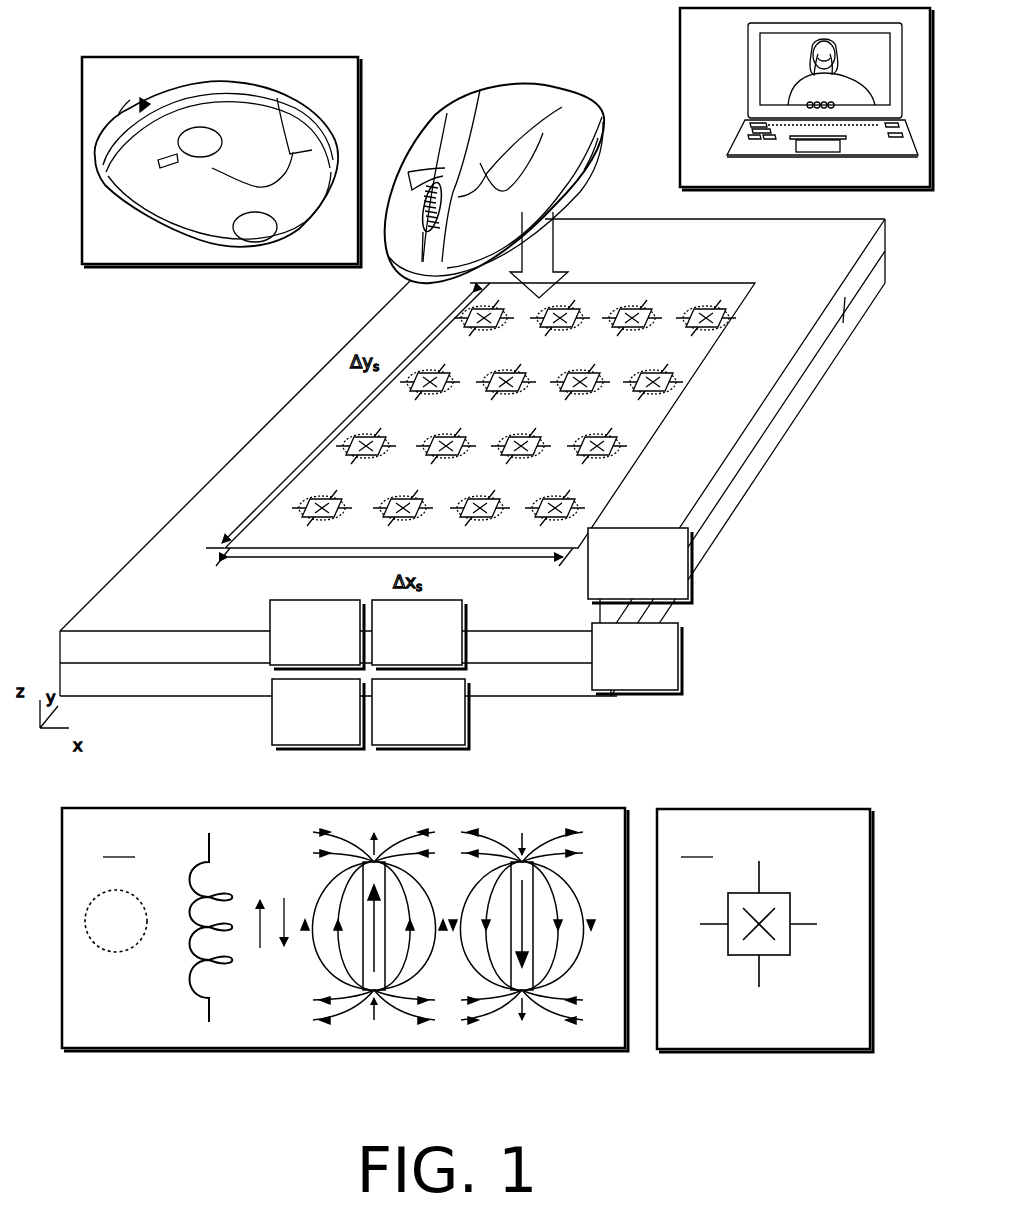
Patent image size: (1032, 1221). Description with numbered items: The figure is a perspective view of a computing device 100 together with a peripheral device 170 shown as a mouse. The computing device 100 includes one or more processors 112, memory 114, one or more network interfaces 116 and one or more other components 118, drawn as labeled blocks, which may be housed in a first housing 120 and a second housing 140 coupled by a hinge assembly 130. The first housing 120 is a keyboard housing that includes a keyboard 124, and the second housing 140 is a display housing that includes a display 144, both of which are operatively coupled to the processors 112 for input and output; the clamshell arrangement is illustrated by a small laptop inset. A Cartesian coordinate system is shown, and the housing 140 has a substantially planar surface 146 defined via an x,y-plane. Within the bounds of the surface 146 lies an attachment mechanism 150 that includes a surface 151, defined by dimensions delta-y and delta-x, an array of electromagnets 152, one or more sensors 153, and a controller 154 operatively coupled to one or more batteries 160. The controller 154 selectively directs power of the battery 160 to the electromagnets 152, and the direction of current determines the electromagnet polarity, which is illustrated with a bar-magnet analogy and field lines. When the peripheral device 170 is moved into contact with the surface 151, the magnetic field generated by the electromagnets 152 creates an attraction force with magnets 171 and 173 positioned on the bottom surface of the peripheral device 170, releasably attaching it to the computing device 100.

The computing device 100 is at (238, 387).
The processors 112 is at (300, 655).
The memory 114 is at (402, 655).
The network interfaces 116 is at (301, 735).
The other components 118 is at (403, 735).
The first housing 120 is at (745, 152).
The keyboard 124 is at (882, 152).
The hinge assembly 130 is at (815, 353).
The second housing 140 is at (746, 85).
The display 144 is at (802, 60).
The surface 146 is at (195, 606).
The attachment mechanism 150 is at (467, 643).
The surface 151 is at (705, 356).
The electromagnets 152 is at (724, 316).
The sensors 153 is at (698, 302).
The controller 154 is at (623, 587).
The batteries 160 is at (620, 681).
The peripheral device 170 is at (602, 126).
The magnet 171 is at (190, 147).
The magnet 173 is at (235, 228).